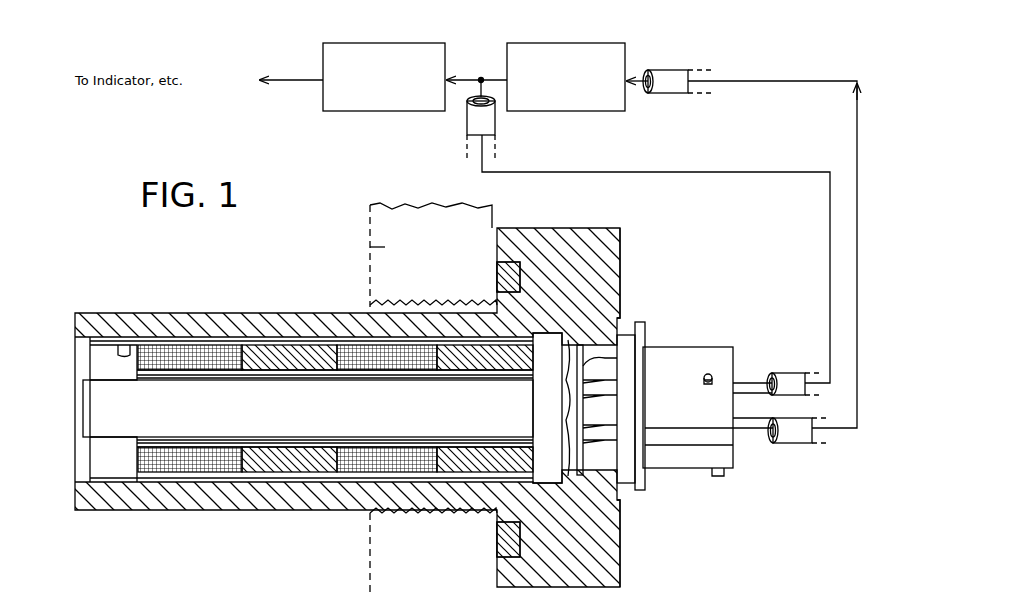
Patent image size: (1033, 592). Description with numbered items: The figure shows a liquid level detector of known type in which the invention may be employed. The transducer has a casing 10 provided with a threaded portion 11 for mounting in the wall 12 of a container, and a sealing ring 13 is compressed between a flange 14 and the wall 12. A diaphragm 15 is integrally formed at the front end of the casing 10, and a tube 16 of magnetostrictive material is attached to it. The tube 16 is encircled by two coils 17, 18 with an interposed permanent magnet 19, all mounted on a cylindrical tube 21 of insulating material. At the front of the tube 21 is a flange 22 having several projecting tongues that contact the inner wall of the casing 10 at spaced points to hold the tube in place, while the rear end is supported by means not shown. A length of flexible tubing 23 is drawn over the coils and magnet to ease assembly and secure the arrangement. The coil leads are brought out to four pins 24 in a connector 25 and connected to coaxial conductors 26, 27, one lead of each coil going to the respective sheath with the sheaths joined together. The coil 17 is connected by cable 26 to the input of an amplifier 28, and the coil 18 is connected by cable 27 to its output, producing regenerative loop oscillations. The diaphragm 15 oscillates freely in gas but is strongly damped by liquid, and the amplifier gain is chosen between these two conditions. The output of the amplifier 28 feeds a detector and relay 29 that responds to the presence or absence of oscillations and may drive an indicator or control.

The casing 10 is at (305, 320).
The threaded portion 11 is at (445, 302).
The wall 12 is at (382, 247).
The sealing ring 13 is at (508, 262).
The flange 14 is at (588, 245).
The diaphragm 15 is at (110, 352).
The tube of magnetostrictive material 16 is at (354, 414).
The coil 17 is at (222, 345).
The coil 18 is at (362, 345).
The permanent magnet 19 is at (275, 345).
The cylindrical tube of insulating material 21 is at (210, 372).
The flange 22 is at (128, 340).
The flexible tubing 23 is at (205, 472).
The pins 24 is at (600, 410).
The connector 25 is at (697, 348).
The coaxial conductor 26 is at (668, 70).
The coaxial conductor 27 is at (462, 125).
The amplifier 28 is at (585, 46).
The detector and relay 29 is at (402, 43).